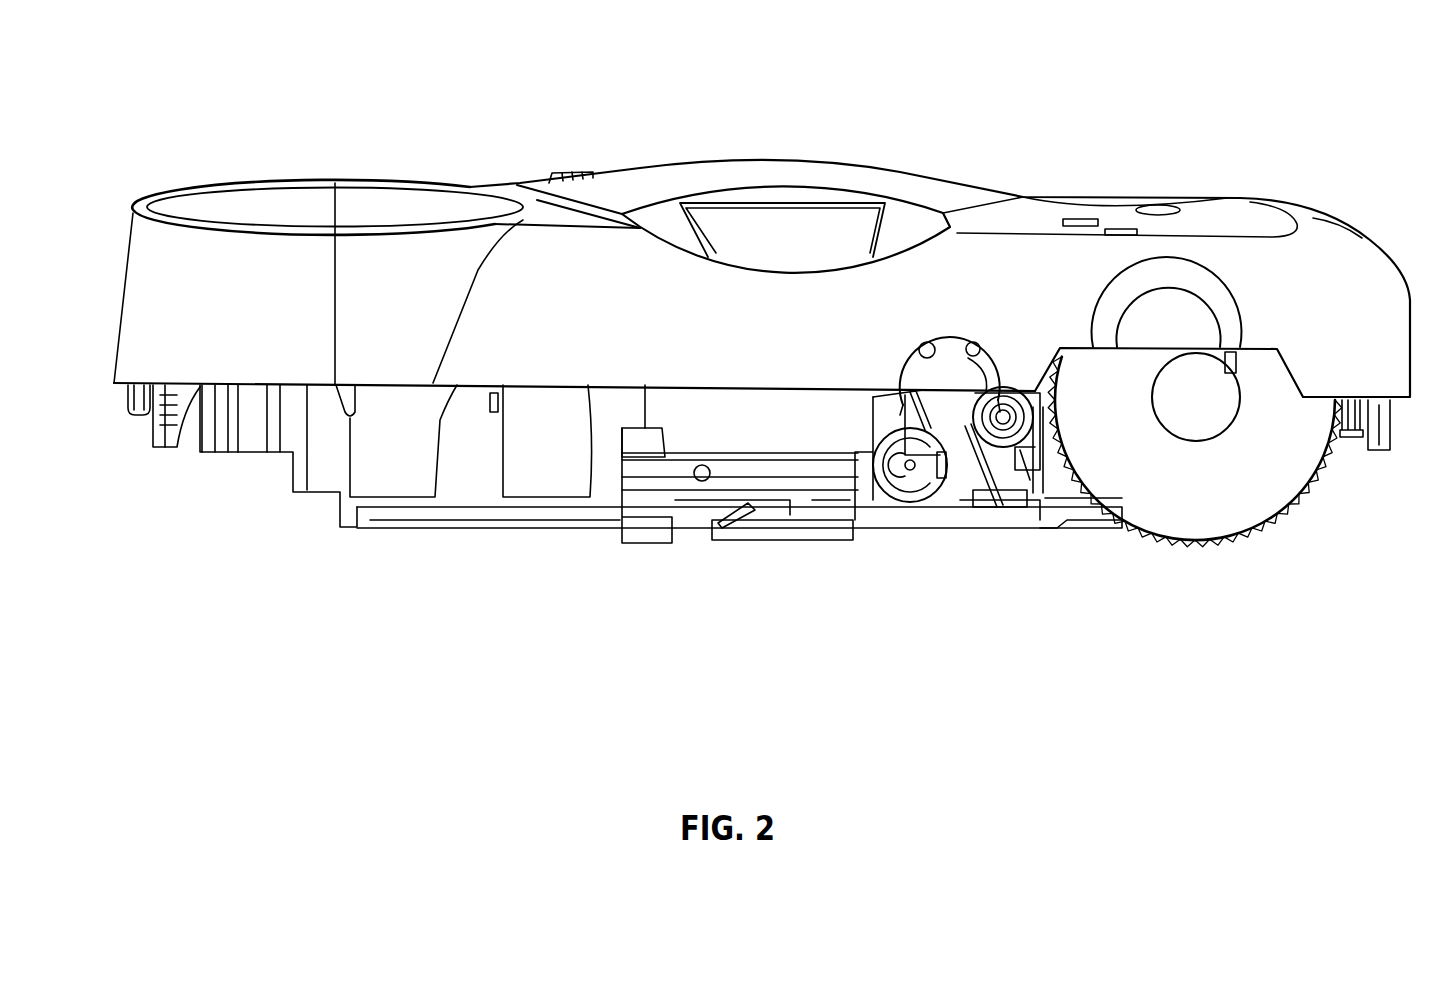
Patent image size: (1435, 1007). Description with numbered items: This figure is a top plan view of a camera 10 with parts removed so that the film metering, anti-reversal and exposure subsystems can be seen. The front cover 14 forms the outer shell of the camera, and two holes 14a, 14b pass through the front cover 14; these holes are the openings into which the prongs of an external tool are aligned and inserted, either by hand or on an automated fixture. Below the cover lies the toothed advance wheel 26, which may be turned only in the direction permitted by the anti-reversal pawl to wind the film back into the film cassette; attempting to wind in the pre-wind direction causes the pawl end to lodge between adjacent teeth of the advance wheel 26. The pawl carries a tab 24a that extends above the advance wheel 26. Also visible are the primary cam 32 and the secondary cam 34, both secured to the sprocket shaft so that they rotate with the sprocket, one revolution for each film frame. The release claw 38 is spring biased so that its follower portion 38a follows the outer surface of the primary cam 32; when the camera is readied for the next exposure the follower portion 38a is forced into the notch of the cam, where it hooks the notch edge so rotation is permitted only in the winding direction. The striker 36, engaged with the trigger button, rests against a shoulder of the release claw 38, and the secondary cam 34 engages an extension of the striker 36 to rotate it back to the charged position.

The camera 10 is at (222, 152).
The front cover 14 is at (1310, 203).
The hole 14a is at (1075, 220).
The hole 14b is at (1123, 230).
The tab 24a is at (1092, 520).
The advance wheel 26 is at (1222, 513).
The primary cam 32 is at (898, 510).
The secondary cam 34 is at (870, 426).
The striker 36 is at (1038, 505).
The release claw 38 is at (903, 367).
The follower portion 38a is at (947, 503).